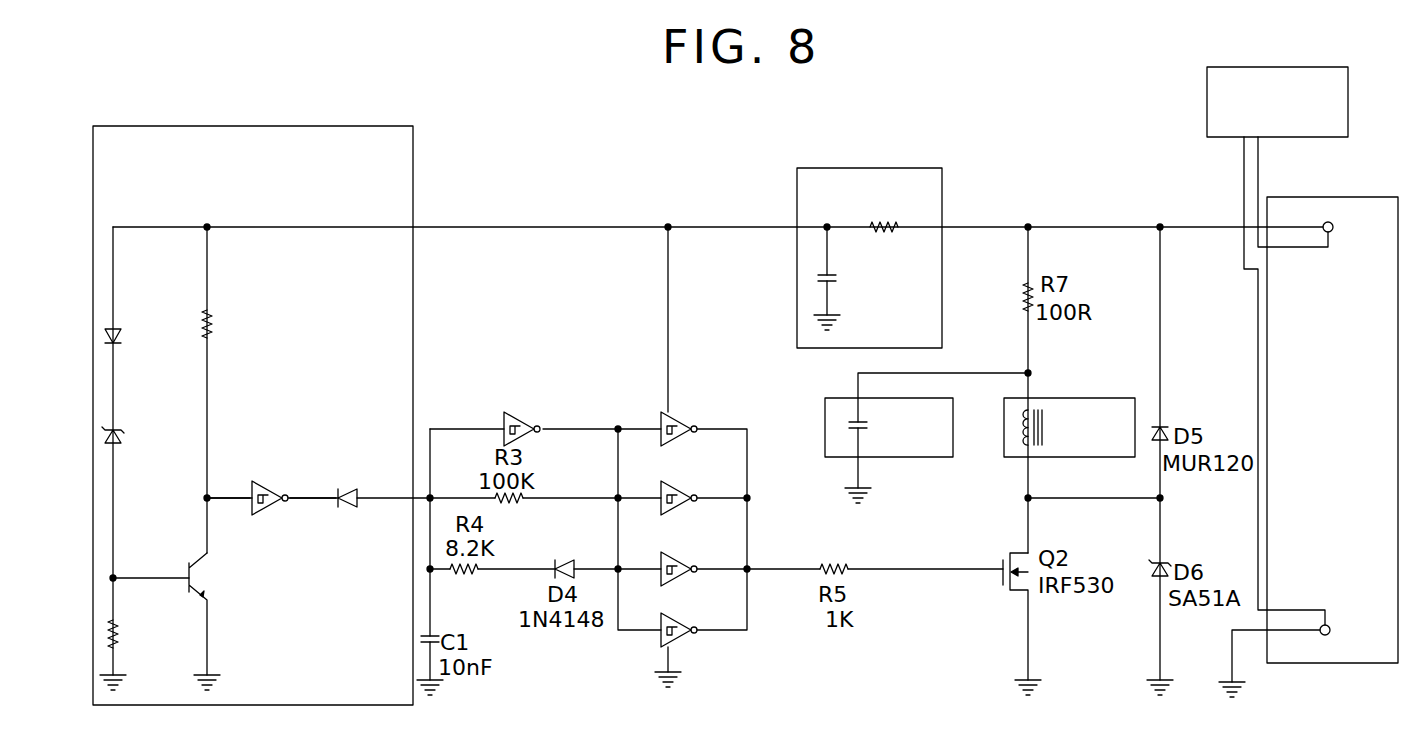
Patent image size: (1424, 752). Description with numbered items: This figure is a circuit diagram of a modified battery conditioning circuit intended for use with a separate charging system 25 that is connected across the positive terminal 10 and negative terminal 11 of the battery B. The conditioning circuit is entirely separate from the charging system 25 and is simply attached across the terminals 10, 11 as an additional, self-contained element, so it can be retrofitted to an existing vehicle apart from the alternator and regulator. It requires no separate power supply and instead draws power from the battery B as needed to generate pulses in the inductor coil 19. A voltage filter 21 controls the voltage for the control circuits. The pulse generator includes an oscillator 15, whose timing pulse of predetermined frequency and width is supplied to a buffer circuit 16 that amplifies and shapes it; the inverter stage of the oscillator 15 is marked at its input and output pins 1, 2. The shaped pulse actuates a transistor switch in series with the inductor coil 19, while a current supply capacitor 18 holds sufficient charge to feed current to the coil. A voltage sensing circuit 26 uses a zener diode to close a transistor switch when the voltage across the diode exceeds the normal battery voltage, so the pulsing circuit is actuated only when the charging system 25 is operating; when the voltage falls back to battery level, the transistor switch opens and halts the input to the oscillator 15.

The voltage sensing circuit 26 is at (343, 126).
The voltage filter 21 is at (797, 205).
The oscillator 15 is at (503, 387).
The buffer circuit 16 is at (710, 390).
The current supply capacitor 18 is at (825, 398).
The inductor coil 19 is at (1095, 398).
The charging system 25 is at (1207, 112).
The positive terminal 10 is at (1333, 224).
The negative terminal 11 is at (1330, 633).
The battery B is at (1320, 663).
The inverter input pin 1 is at (230, 484).
The inverter output pin 2 is at (313, 484).